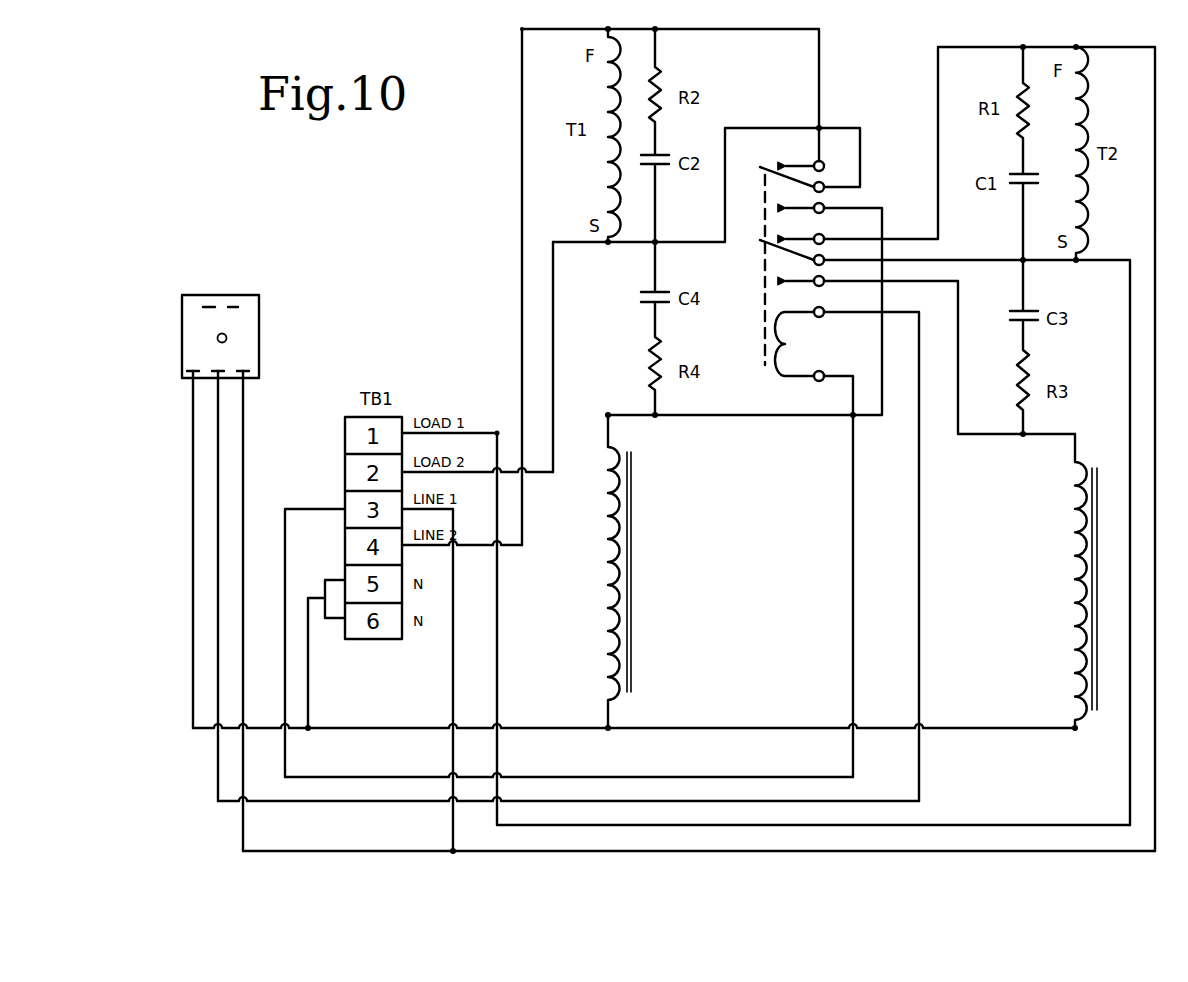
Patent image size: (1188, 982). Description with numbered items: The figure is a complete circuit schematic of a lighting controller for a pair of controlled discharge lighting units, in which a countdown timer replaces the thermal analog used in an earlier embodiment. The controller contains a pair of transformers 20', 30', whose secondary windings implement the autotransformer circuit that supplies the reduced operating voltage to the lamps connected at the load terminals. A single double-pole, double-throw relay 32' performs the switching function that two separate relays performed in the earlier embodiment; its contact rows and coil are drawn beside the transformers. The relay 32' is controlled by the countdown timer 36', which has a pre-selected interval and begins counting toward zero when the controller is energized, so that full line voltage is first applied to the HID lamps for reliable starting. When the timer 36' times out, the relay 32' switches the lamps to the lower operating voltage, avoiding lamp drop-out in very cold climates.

The transformer 20' is at (675, 571).
The transformer 30' is at (1035, 581).
The double-pole, double-throw relay 32' is at (848, 202).
The countdown timer 36' is at (279, 542).